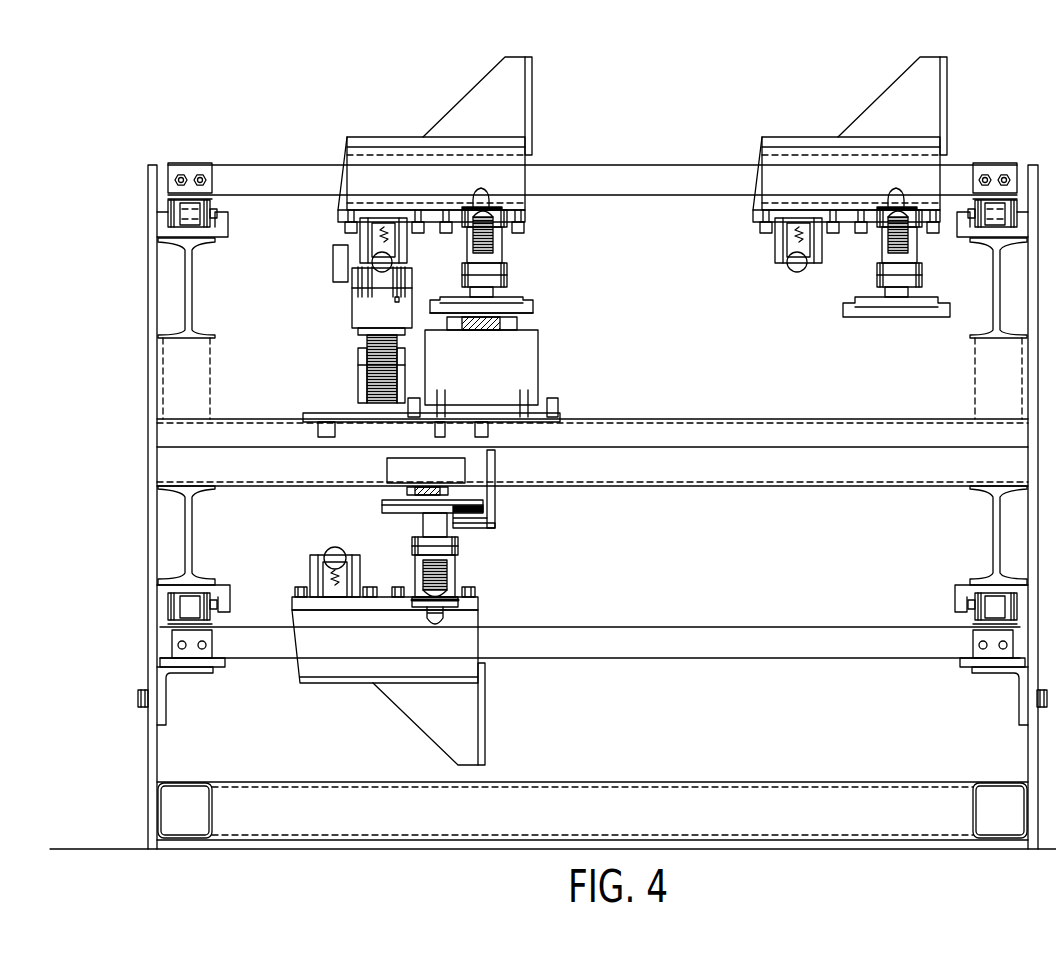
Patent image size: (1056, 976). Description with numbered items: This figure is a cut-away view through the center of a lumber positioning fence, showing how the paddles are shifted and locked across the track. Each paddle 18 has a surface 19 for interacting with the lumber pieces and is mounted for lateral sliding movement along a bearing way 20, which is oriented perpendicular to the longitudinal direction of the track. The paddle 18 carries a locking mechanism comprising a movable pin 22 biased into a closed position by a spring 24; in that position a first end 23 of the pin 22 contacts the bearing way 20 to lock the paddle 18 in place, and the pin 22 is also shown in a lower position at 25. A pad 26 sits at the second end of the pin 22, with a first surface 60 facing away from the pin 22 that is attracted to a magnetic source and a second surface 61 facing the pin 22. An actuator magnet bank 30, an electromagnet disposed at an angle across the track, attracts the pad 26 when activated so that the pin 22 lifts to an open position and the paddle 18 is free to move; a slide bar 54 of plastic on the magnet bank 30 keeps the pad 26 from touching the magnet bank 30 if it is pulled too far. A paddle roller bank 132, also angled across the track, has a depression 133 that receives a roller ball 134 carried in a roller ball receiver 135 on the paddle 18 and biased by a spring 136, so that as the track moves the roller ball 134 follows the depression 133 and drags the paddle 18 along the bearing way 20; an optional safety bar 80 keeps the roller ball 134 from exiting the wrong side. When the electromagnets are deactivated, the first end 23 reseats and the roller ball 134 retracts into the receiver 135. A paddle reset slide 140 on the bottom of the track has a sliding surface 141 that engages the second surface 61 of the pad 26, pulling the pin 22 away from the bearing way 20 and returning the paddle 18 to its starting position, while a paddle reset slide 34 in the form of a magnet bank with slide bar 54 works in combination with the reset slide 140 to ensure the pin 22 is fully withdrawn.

The paddle 18 is at (440, 117).
The surface 19 is at (532, 107).
The bearing way 20 is at (617, 164).
The movable pin 22 is at (507, 228).
The first end of the pin 23 is at (462, 606).
The spring 24 is at (493, 250).
The pin in a lower position 25 is at (442, 617).
The pad 26 is at (515, 310).
The actuator magnet bank 30 is at (528, 370).
The paddle reset slide 34 is at (395, 475).
The slide bar 54 is at (483, 323).
The first surface of the pad 60 is at (518, 320).
The second surface of the pad 61 is at (510, 289).
The safety bar 80 is at (333, 264).
The paddle roller bank 132 is at (352, 297).
The depression 133 is at (386, 266).
The roller ball 134 is at (385, 262).
The roller ball receiver 135 is at (360, 237).
The spring 136 is at (380, 233).
The paddle reset slide 140 is at (497, 507).
The sliding surface 141 is at (473, 527).